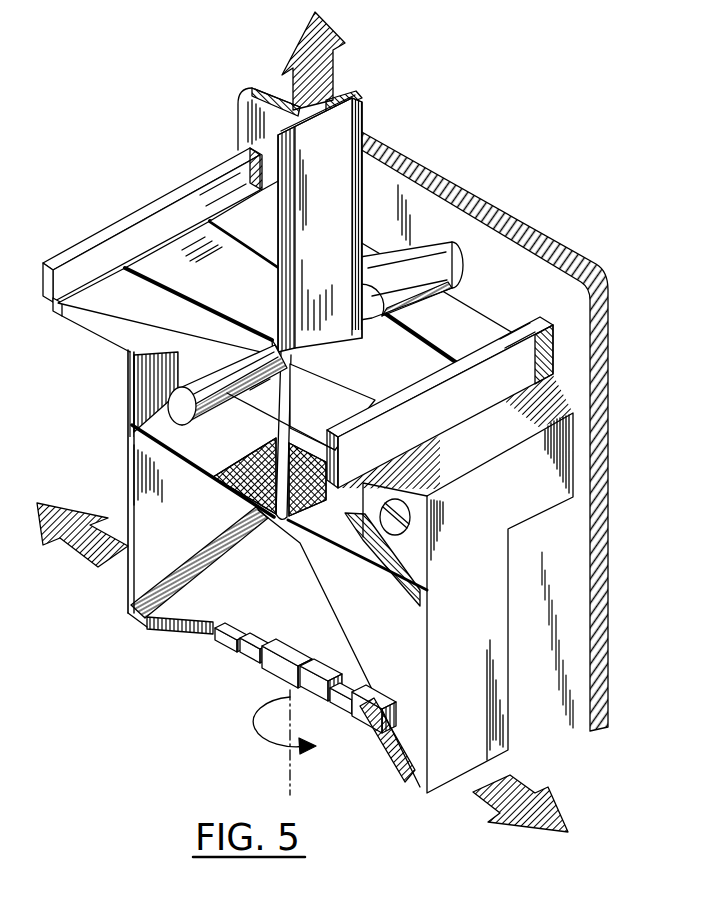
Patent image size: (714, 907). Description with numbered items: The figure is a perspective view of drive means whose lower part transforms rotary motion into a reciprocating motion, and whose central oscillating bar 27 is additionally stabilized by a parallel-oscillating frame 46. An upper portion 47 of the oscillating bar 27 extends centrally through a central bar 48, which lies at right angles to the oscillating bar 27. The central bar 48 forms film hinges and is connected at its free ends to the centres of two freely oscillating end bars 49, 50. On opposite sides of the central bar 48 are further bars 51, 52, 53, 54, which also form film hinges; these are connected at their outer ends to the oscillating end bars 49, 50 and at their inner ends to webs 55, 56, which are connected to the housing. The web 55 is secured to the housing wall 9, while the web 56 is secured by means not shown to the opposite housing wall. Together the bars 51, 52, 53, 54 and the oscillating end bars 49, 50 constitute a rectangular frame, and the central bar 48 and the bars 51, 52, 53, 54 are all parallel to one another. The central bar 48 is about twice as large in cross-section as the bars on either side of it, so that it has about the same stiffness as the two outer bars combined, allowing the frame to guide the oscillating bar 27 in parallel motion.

The housing wall 9 is at (539, 268).
The oscillating bar 27 is at (298, 497).
The parallel-oscillating frame 46 is at (161, 165).
The upper portion 47 is at (339, 193).
The central bar 48 is at (177, 248).
The oscillating end bar 49 is at (540, 372).
The oscillating end bar 50 is at (188, 207).
The bar 51 is at (274, 220).
The bar 52 is at (134, 311).
The bar 53 is at (461, 333).
The bar 54 is at (317, 420).
The web 55 is at (449, 283).
The web 56 is at (180, 384).